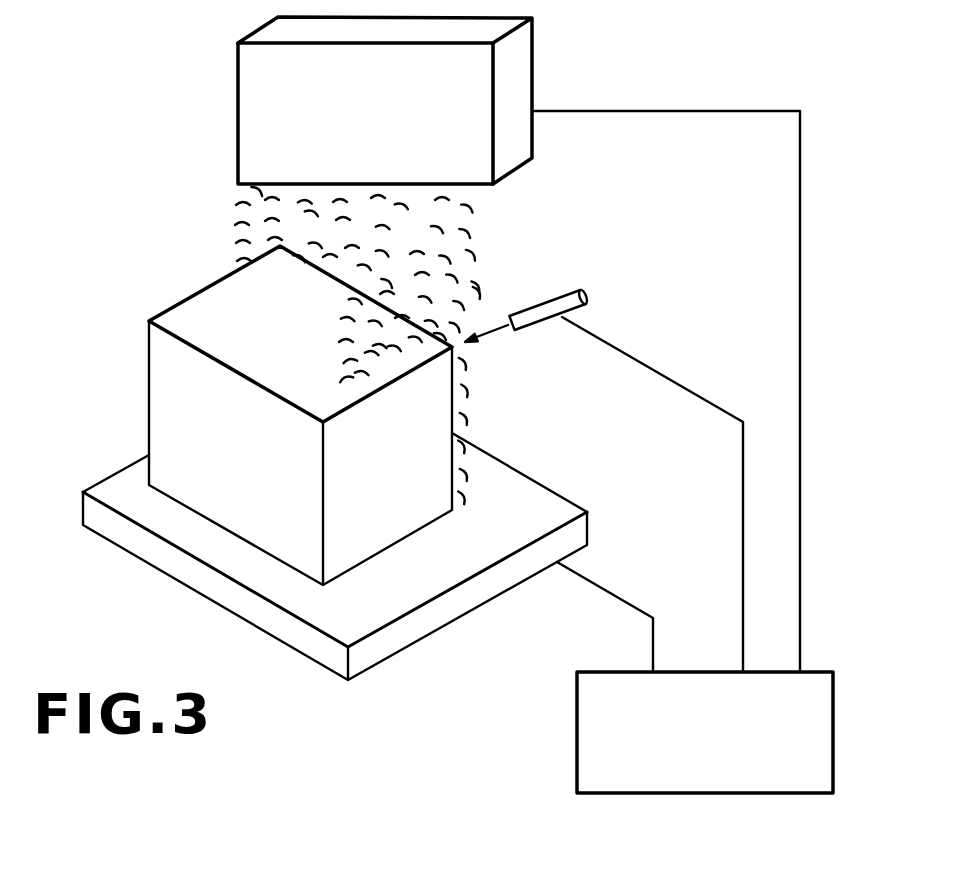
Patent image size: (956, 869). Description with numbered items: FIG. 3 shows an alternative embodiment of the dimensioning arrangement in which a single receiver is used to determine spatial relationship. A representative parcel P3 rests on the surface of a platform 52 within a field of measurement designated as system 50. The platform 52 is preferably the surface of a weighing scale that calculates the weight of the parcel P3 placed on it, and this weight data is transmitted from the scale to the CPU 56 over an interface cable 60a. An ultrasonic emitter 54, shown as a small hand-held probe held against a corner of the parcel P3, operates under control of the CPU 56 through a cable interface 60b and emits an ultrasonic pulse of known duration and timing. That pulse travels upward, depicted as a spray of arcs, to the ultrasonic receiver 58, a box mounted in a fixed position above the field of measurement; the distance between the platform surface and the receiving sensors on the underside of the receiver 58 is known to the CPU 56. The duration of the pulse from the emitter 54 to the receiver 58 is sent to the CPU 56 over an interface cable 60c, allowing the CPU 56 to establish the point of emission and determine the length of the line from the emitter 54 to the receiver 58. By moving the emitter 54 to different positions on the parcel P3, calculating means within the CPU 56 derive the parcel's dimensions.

The system 50 is at (140, 249).
The platform 52 is at (480, 593).
The ultrasonic emitter 54 is at (553, 290).
The CPU 56 is at (580, 723).
The ultrasonic receiver 58 is at (245, 92).
The interface cable 60a is at (627, 600).
The cable interface 60b is at (683, 390).
The interface cable 60c is at (673, 111).
The parcel P3 is at (153, 398).